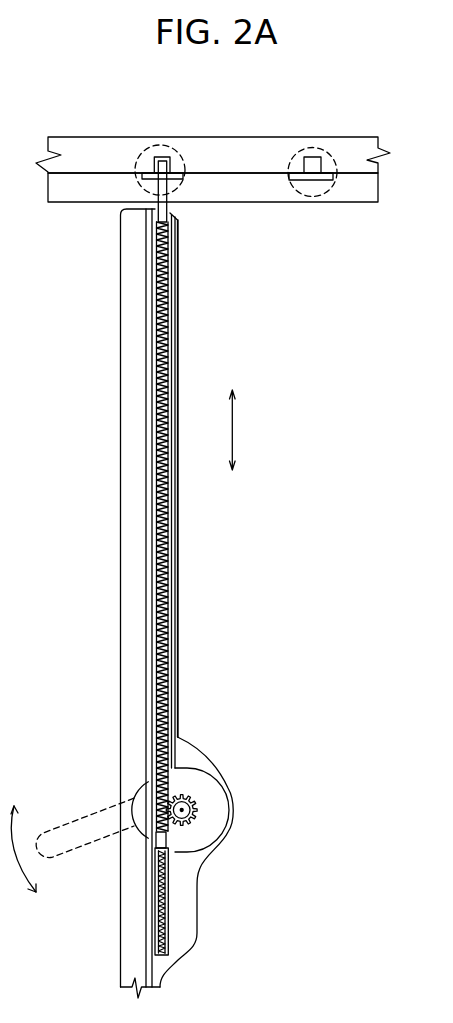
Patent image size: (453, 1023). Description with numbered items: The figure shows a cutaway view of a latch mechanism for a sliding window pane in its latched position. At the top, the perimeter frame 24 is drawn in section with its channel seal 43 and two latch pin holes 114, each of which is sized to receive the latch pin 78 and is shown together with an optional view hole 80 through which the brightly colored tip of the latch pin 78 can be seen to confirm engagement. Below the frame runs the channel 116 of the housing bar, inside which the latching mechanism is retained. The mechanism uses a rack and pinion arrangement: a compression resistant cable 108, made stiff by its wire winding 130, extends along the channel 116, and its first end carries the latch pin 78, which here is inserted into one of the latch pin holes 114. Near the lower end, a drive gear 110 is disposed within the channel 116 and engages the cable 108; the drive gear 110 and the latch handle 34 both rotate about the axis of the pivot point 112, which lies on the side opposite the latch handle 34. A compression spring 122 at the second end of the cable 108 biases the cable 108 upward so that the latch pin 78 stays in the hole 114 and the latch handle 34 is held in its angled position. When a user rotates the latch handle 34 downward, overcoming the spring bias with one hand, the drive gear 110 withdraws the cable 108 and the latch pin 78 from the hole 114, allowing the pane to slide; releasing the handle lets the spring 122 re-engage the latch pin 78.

The perimeter frame 24 is at (320, 137).
The seal 43 is at (57, 187).
The latch pin hole 114 is at (160, 155).
The view hole 80 is at (187, 167).
The latch pin 78 is at (147, 190).
The channel 116 is at (152, 283).
The wire winding 130 is at (170, 600).
The cable 108 is at (168, 656).
The drive gear 110 is at (200, 823).
The pivot point 112 is at (183, 808).
The compression spring 122 is at (165, 883).
The latch handle 34 is at (77, 830).